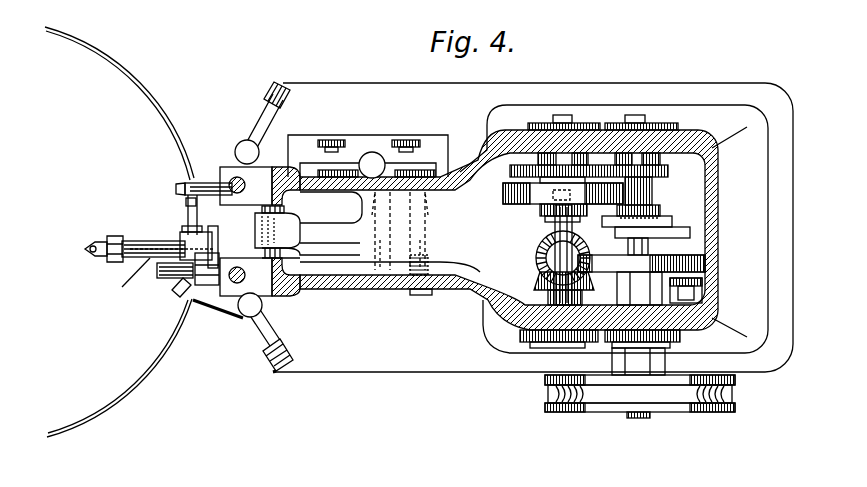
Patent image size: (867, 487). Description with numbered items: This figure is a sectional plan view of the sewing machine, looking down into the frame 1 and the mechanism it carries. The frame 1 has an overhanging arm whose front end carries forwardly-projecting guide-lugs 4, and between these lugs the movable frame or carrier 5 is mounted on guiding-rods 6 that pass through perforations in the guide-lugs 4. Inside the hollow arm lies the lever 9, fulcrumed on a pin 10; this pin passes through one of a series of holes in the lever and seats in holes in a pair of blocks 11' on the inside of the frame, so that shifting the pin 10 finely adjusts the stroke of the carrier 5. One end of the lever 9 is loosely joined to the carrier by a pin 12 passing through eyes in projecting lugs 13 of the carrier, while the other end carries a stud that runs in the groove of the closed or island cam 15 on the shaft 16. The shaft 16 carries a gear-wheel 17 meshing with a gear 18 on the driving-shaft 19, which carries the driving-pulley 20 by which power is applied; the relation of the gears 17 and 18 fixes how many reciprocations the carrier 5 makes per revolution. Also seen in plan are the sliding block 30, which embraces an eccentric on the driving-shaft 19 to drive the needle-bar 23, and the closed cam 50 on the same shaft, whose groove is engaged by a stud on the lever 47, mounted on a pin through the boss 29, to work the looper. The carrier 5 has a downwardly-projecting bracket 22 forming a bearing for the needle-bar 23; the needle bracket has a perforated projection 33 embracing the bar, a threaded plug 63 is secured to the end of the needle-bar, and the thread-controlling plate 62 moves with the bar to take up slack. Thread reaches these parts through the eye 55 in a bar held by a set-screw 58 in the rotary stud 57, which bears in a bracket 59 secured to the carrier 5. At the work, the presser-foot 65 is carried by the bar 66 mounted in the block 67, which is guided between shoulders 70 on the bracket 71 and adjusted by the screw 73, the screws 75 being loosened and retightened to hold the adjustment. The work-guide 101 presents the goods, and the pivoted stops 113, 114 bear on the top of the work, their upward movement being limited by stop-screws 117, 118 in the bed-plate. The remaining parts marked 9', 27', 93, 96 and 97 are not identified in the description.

The frame 1 is at (716, 188).
The work-guide 101 is at (160, 356).
The shoulders 70 is at (458, 160).
The guide-lugs 4 is at (246, 231).
The guiding-rods 6 is at (242, 227).
The pivoted guide or stop 114 is at (257, 122).
The stop-screw 118 is at (247, 152).
The pivoted guide or stop 113 is at (275, 318).
The stop-screw 117 is at (250, 305).
The bracket 71 is at (355, 158).
The screws 75 is at (371, 135).
The block 67 is at (376, 167).
The screw 73 is at (372, 165).
The lever 9 is at (370, 227).
The pin 12 is at (280, 230).
The projecting lugs 13 is at (284, 214).
The movable frame or carrier 5 is at (292, 251).
The blocks 11' is at (416, 226).
The fulcrum-pin 10 is at (420, 292).
The chamber wall 9' is at (471, 243).
The presser-foot bar 66 is at (194, 188).
The presser-foot 65 is at (186, 206).
The rotary stud 57 is at (182, 245).
The bracket 59 is at (182, 228).
The perforated projection 33 is at (124, 242).
The needle-bar 23 is at (134, 241).
The threaded plug 63 is at (100, 244).
The thread-controlling plate 62 is at (165, 258).
The eye 55 is at (129, 275).
The set-screw 58 is at (207, 269).
The bracket 22 is at (180, 296).
The shaft 16 is at (566, 118).
The driving-shaft 19 is at (646, 118).
The gear-wheel 17 is at (510, 170).
The closed or island cam 15 is at (503, 195).
The gear 18 is at (664, 174).
The disc 27' is at (659, 210).
The sliding block 30 is at (646, 235).
The boss 29 is at (695, 245).
The closed cam 50 is at (641, 280).
The lever 47 is at (703, 291).
The shaft 93 is at (553, 262).
The bevel gear 96 is at (546, 250).
The bevel pinion 97 is at (545, 284).
The driving-pulley 20 is at (736, 394).